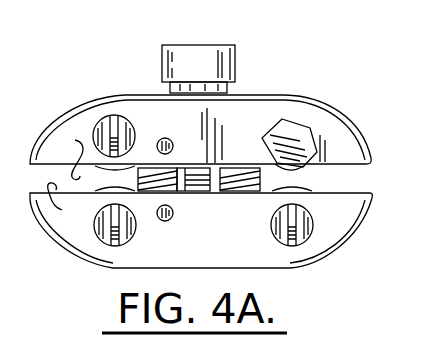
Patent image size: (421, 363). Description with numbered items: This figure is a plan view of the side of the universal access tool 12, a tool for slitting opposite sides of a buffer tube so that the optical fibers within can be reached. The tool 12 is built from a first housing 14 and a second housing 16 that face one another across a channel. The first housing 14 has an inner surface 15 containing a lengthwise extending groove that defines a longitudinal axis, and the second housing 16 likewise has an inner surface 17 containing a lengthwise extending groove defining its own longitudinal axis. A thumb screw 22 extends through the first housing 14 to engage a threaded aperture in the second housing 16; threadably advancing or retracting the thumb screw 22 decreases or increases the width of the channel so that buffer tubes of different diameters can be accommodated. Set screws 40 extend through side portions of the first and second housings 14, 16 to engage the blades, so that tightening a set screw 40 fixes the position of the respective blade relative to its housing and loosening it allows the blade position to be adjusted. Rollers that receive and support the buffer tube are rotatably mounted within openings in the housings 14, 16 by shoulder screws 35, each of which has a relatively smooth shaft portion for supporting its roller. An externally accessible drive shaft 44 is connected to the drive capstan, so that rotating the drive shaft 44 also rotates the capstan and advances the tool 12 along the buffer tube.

The universal access tool 12 is at (293, 83).
The first housing 14 is at (348, 133).
The second housing 16 is at (350, 218).
The inner surface 15 is at (69, 154).
The inner surface 17 is at (70, 205).
The thumb screw 22 is at (232, 55).
The shoulder screws 35 is at (101, 134).
The set screws 40 is at (160, 140).
The drive shaft 44 is at (298, 135).